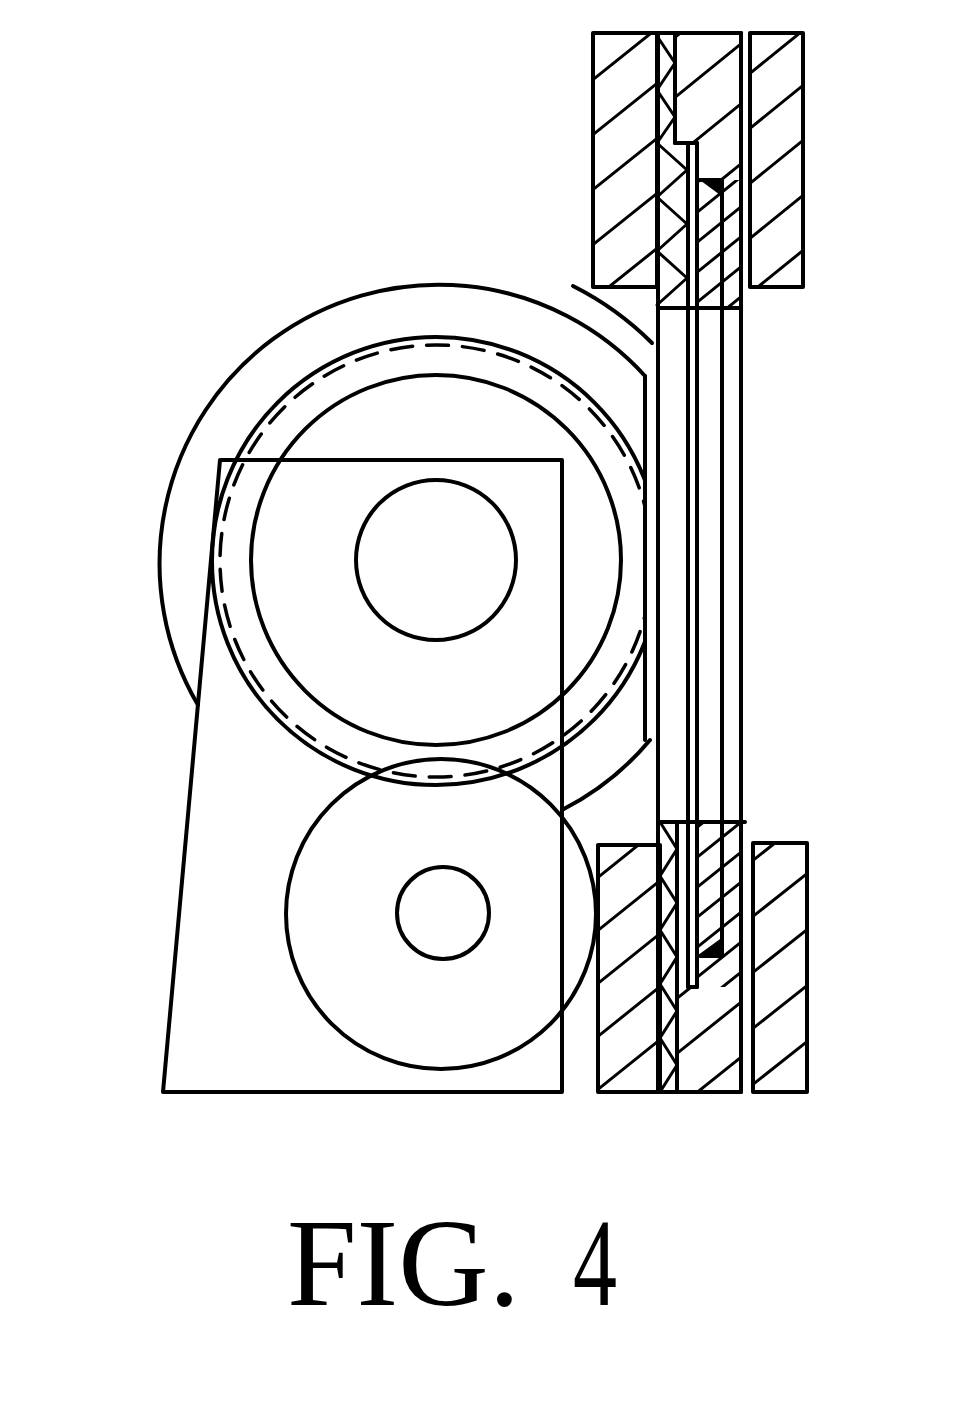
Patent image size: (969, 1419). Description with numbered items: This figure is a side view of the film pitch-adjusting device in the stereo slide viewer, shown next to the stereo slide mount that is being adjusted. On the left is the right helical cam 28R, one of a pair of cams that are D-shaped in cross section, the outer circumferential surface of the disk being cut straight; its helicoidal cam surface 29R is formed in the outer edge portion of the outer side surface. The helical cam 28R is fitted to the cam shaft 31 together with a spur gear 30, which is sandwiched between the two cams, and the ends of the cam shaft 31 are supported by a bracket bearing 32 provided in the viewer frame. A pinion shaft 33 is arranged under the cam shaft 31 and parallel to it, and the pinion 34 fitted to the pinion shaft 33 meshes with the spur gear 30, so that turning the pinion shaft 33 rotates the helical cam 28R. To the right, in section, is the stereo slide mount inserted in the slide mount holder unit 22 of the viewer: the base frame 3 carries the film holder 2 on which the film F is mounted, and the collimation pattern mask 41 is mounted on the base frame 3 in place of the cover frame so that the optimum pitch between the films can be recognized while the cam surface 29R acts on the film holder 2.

The slide mount holder unit 22 is at (593, 52).
The collimation pattern mask 41 is at (573, 286).
The base frame 3 is at (745, 375).
The film holder 2 is at (712, 658).
The film F is at (700, 738).
The right helical cam 28R is at (268, 333).
The right helicoidal cam surface 29R is at (188, 466).
The spur gear 30 is at (237, 655).
The cam shaft 31 is at (395, 548).
The bracket bearing 32 is at (232, 803).
The pinion 34 is at (288, 898).
The pinion shaft 33 is at (443, 928).